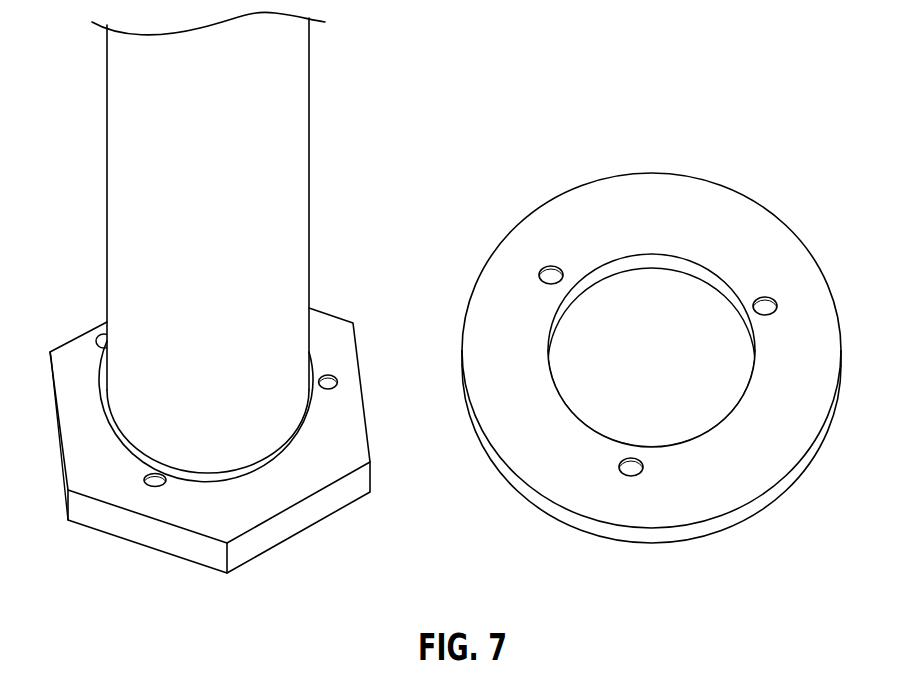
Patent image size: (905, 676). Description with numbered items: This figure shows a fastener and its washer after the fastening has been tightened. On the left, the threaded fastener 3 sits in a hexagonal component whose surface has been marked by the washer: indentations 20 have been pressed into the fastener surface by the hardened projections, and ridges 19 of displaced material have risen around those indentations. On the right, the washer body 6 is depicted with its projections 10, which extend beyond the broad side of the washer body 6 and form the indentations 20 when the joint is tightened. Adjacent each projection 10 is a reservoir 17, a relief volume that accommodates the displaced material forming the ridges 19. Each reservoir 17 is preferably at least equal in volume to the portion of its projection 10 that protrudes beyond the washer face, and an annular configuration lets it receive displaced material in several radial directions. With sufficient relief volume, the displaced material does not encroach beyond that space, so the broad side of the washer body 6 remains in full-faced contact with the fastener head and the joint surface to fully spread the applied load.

The threaded fastener 3 is at (283, 159).
The indentations 20 is at (331, 378).
The ridges 19 is at (331, 389).
The washer body 6 is at (742, 218).
The projections 10 is at (549, 267).
The reservoirs 17 is at (553, 287).